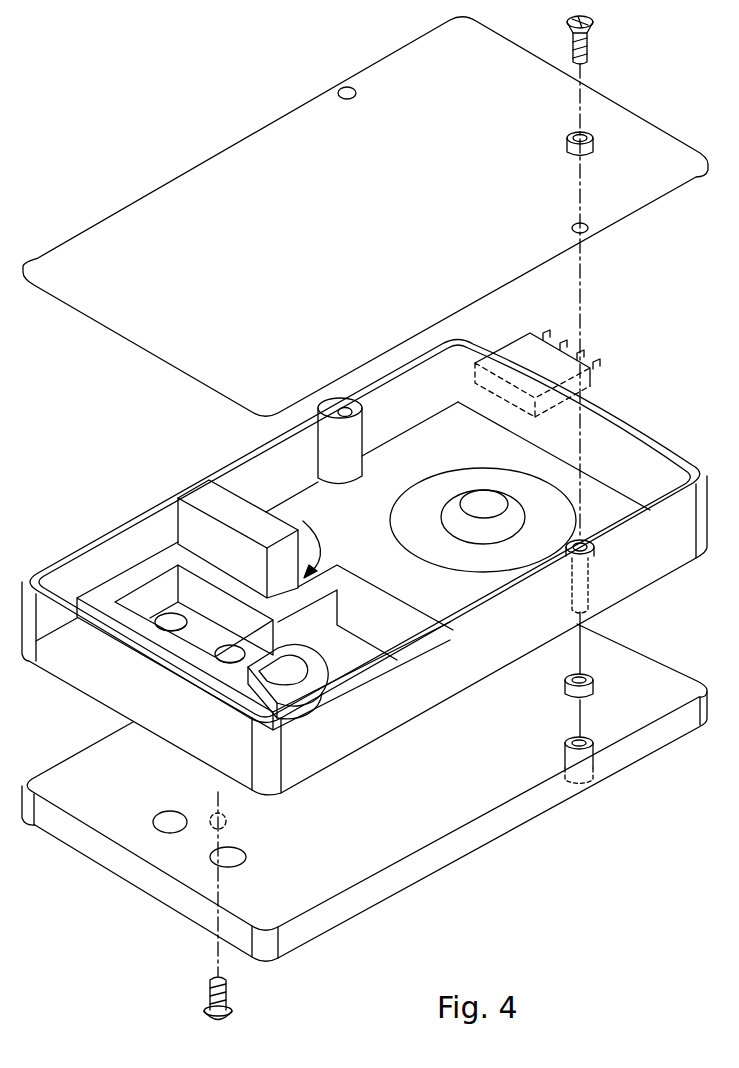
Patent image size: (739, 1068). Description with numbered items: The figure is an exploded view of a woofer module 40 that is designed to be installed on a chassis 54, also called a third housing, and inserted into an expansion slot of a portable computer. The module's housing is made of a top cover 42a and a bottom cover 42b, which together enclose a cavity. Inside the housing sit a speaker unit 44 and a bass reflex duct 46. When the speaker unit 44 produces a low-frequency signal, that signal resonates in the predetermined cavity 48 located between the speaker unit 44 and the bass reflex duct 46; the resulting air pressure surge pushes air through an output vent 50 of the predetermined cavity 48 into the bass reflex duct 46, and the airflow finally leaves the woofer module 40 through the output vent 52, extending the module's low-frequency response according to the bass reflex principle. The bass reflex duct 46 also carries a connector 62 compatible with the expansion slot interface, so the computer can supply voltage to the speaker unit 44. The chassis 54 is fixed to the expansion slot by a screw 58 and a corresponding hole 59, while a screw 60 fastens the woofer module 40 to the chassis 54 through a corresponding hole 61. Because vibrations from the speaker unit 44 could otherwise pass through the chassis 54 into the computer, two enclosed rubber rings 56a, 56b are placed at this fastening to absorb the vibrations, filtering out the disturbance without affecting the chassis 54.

The woofer module 40 is at (160, 90).
The top cover 42a is at (147, 190).
The bottom cover 42b is at (600, 437).
The speaker unit 44 is at (403, 518).
The bass reflex duct 46 is at (153, 528).
The predetermined cavity 48 is at (617, 508).
The output vent 50 is at (266, 512).
The output vent 52 is at (168, 625).
The chassis 54 is at (108, 876).
The rubber ring 56a is at (584, 136).
The rubber ring 56b is at (594, 688).
The screw 58 is at (233, 1015).
The corresponding hole 59 is at (227, 821).
The screw 60 is at (590, 44).
The corresponding hole 61 is at (594, 760).
The connector 62 is at (598, 357).